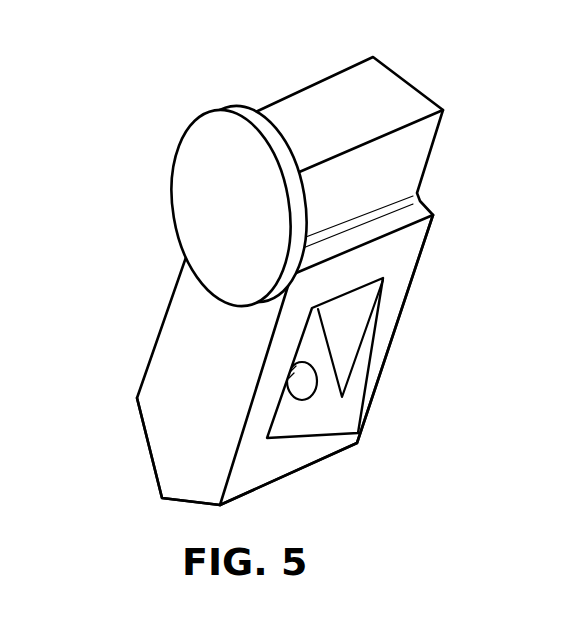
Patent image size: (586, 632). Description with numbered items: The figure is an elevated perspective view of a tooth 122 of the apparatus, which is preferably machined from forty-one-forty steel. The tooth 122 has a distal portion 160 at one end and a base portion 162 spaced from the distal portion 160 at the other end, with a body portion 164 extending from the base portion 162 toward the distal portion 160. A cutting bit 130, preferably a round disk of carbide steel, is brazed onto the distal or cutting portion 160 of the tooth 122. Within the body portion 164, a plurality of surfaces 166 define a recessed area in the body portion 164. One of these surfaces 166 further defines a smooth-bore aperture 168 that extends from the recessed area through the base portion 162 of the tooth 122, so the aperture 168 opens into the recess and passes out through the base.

The tooth 122 is at (287, 252).
The cutting bit 130 is at (215, 110).
The distal portion 160 is at (307, 86).
The base portion 162 is at (148, 455).
The body portion 164 is at (417, 267).
The surfaces 166 is at (352, 328).
The smooth-bore aperture 168 is at (304, 377).